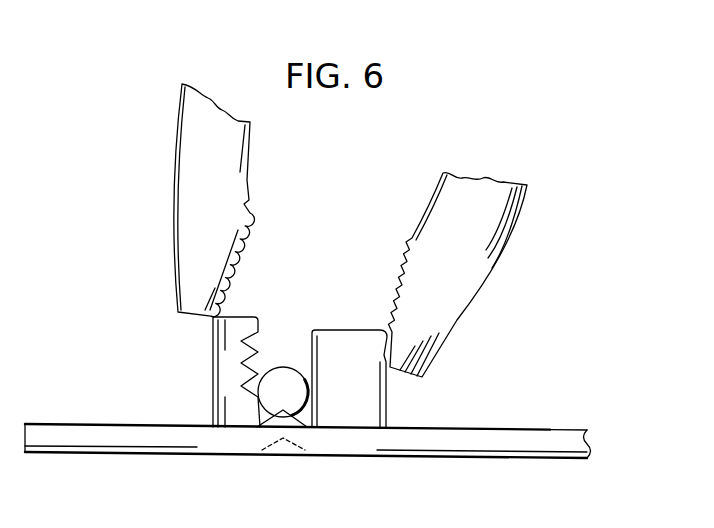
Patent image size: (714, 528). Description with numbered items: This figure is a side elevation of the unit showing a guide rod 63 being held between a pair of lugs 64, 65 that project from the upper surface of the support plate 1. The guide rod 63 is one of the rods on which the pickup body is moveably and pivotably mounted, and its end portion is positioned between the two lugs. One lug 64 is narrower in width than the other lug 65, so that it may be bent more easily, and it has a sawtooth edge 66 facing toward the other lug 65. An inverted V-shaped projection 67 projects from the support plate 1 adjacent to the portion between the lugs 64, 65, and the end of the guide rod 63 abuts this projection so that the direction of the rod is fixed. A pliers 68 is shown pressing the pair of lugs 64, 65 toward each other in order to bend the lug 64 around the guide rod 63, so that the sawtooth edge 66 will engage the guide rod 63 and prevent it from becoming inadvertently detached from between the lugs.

The support plate 1 is at (453, 427).
The guide rod 63 is at (283, 367).
The lug 64 is at (237, 315).
The lug 65 is at (352, 330).
The sawtooth edge 66 is at (262, 333).
The inverted V-shaped projection 67 is at (310, 413).
The pliers 68 is at (503, 245).